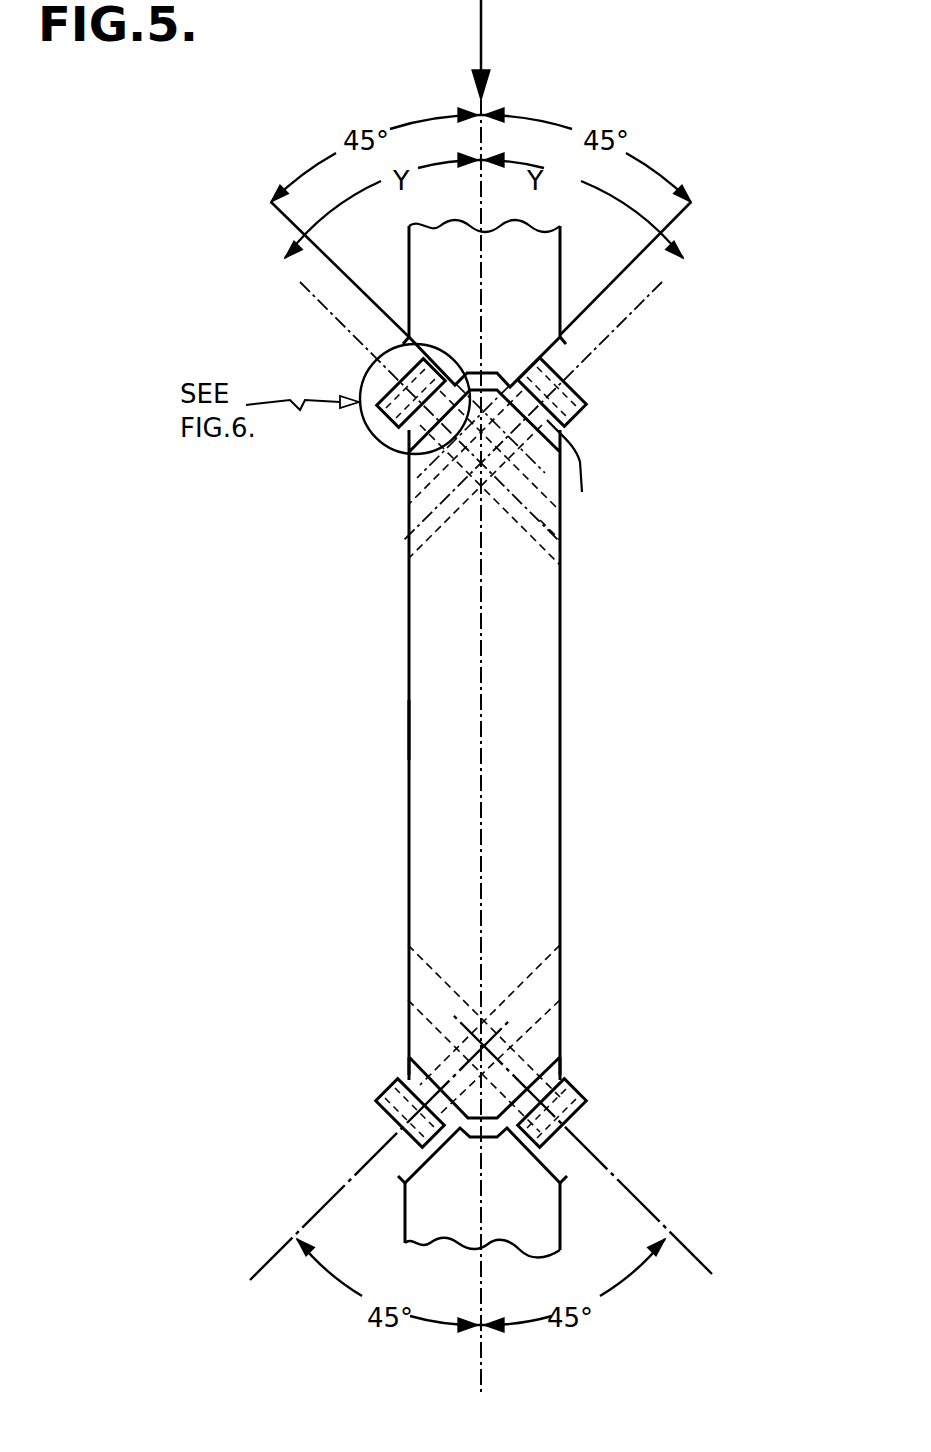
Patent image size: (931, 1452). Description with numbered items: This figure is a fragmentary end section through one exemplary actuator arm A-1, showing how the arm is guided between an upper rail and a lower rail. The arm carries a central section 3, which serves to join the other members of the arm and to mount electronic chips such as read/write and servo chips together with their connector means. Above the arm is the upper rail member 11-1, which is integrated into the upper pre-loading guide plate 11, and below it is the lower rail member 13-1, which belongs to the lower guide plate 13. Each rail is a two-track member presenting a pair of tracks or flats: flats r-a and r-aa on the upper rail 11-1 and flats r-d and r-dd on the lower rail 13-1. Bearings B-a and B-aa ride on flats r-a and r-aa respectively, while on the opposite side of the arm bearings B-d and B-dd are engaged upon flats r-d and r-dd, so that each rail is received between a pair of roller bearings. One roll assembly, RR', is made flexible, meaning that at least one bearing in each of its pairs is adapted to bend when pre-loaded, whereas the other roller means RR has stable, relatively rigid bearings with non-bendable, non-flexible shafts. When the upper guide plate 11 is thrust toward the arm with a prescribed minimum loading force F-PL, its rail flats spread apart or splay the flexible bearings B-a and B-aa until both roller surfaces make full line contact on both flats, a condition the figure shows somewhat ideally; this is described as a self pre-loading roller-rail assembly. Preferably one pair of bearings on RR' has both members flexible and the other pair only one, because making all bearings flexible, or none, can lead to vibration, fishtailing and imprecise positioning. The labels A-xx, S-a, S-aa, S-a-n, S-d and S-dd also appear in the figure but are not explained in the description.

The section 3 is at (388, 637).
The upper guide plate 11 is at (386, 290).
The upper rail member 11-1 is at (532, 280).
The lower guide plate 13 is at (385, 1220).
The lower rail member 13-1 is at (540, 1224).
The actuator arm A-1 is at (355, 733).
The longitudinal axis A-xx is at (481, 207).
The loading force F-PL is at (483, 50).
The bearing B-a is at (580, 428).
The bearing B-aa is at (373, 437).
The bearing B-d is at (590, 1104).
The bearing B-dd is at (373, 1104).
The flat r-a is at (552, 347).
The flat r-aa is at (378, 370).
The flat r-d is at (540, 1170).
The flat r-dd is at (425, 1170).
The surface a S-a is at (560, 511).
The surface aa S-aa is at (448, 463).
The surface a-n S-a-n is at (601, 468).
The surface d S-d is at (560, 1078).
The surface dd S-dd is at (388, 1078).
The roll assembly RR is at (518, 1001).
The flexible roll assembly RR' is at (587, 573).